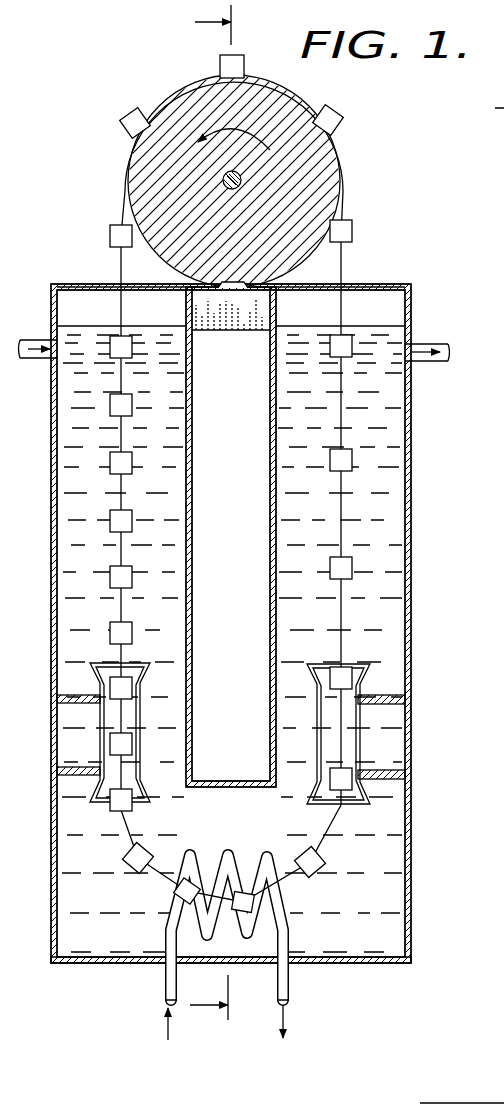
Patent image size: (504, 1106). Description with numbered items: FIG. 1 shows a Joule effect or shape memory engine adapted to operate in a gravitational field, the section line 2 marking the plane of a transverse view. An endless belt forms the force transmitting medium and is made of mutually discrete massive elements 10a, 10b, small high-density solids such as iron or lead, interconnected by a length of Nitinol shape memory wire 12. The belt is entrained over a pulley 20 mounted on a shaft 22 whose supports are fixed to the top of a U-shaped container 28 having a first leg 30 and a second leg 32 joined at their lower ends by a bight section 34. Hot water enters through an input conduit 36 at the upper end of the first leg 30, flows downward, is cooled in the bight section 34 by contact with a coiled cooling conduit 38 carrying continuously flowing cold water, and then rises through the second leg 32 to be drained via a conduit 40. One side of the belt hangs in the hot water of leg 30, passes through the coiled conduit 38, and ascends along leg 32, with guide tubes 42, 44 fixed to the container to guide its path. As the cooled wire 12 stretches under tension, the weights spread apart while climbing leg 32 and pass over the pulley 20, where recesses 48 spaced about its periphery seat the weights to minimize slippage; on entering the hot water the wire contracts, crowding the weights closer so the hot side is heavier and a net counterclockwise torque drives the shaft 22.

The section line 2- 2 is at (224, 533).
The massive element 10a is at (352, 232).
The massive element 10b is at (343, 335).
The shape memory wire 12 is at (344, 212).
The pulley 20 is at (140, 173).
The shaft 22 is at (238, 188).
The U-shaped container 28 is at (428, 528).
The first leg 30 is at (193, 556).
The second leg 32 is at (268, 516).
The bight section 34 is at (83, 964).
The input conduit 36 is at (52, 340).
The coiled cooling conduit 38 is at (233, 855).
The drain conduit 40 is at (430, 345).
The guide tube 42 is at (140, 714).
The guide tube 44 is at (318, 712).
The recesses 48 is at (220, 68).